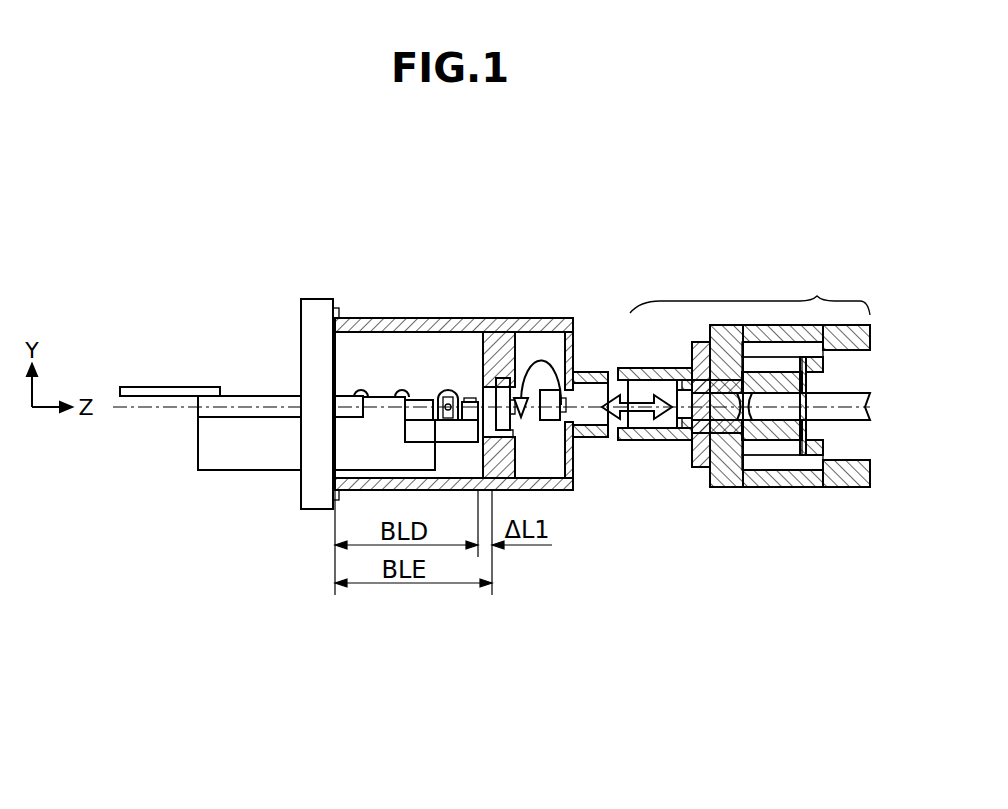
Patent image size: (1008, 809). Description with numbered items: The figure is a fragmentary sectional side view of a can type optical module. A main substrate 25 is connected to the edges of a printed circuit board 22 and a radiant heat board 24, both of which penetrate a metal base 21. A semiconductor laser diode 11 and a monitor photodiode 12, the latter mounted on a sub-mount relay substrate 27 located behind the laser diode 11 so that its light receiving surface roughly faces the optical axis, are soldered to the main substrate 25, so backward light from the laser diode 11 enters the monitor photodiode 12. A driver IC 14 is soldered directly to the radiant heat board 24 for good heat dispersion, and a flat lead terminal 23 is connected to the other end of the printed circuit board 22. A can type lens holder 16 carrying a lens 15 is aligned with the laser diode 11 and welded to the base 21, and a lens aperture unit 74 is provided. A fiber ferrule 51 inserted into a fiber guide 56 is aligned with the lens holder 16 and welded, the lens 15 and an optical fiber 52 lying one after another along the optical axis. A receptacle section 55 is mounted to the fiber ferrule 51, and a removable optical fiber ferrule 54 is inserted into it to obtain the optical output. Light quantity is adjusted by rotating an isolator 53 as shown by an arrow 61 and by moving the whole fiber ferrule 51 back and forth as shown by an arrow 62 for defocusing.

The semiconductor laser diode 11 is at (470, 402).
The monitor photodiode 12 is at (448, 390).
The driver IC 14 is at (357, 318).
The lens 15 is at (549, 388).
The lens holder 16 is at (436, 420).
The base 21 is at (318, 299).
The printed circuit board 22 is at (243, 395).
The flat lead terminal 23 is at (157, 387).
The radiant heat board 24 is at (230, 471).
The main substrate 25 is at (418, 433).
The sub-mount relay substrate 27 is at (415, 399).
The fiber ferrule 51 is at (700, 342).
The optical fiber 52 is at (628, 368).
The isolator 53 is at (546, 420).
The removable optical fiber ferrule 54 is at (847, 425).
The receptacle section 55 is at (817, 300).
The fiber guide 56 is at (597, 437).
The arrow 61 is at (588, 372).
The arrow 62 is at (643, 413).
The lens aperture unit 74 is at (503, 378).